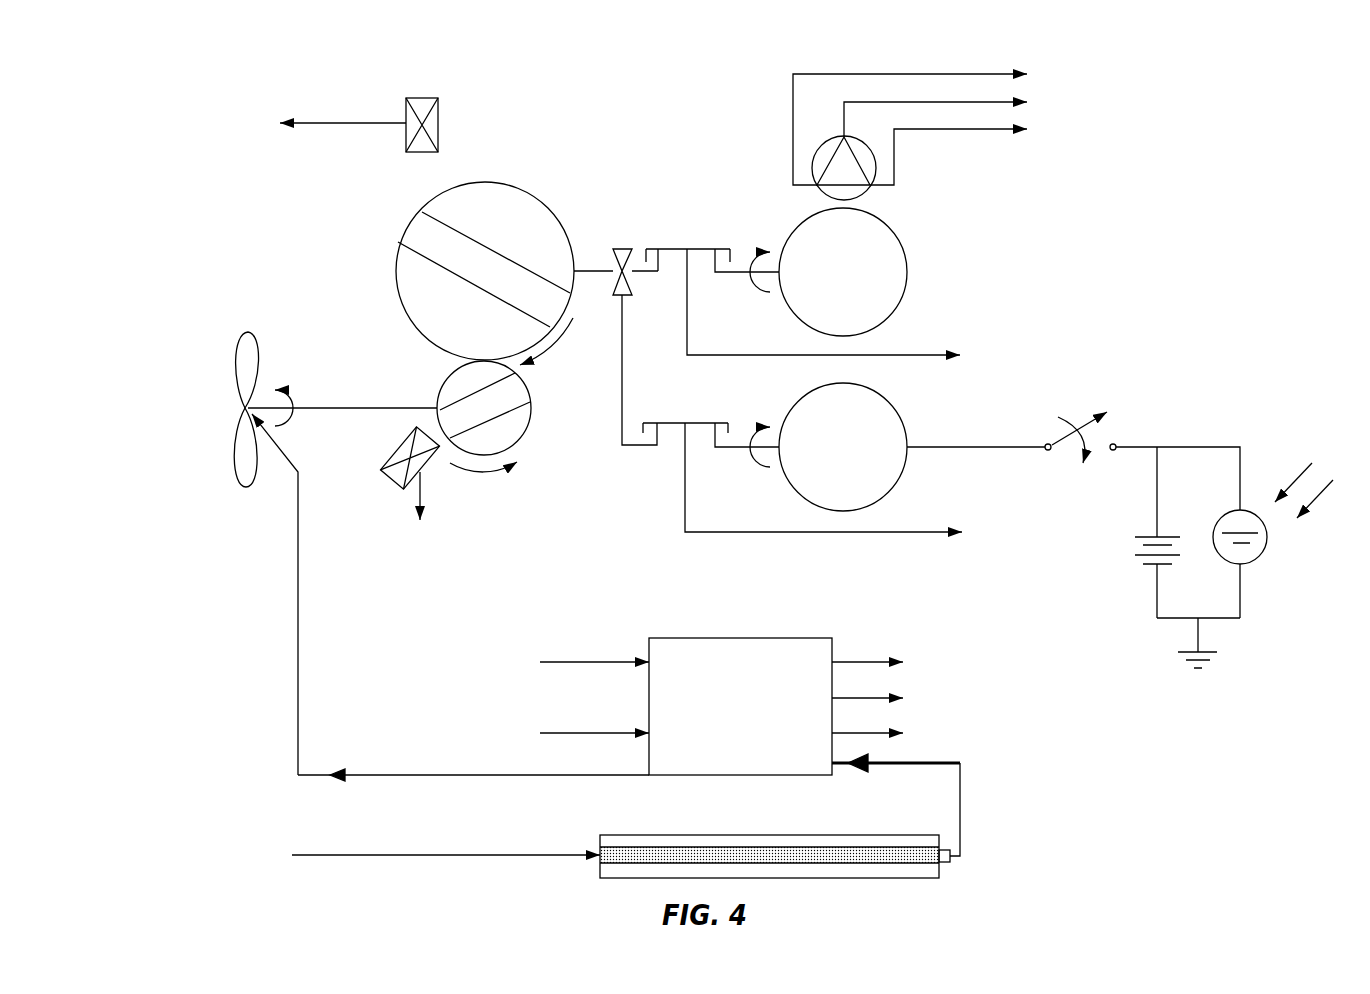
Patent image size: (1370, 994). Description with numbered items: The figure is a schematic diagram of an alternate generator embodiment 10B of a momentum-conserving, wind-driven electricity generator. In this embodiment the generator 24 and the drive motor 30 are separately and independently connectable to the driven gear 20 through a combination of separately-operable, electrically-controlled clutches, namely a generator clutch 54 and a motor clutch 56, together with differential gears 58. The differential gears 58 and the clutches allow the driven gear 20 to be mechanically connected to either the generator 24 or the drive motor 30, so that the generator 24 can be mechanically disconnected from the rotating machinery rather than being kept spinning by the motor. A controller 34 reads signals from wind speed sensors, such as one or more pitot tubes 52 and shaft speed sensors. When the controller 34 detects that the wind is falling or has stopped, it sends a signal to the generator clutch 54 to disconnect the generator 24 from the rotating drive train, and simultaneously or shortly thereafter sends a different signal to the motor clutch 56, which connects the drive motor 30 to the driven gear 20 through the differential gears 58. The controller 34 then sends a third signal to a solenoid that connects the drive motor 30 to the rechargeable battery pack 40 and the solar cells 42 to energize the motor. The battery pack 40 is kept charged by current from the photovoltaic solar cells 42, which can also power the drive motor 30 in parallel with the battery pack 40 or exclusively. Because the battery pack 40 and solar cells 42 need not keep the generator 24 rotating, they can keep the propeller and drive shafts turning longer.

The generator embodiment 10B is at (1172, 62).
The driven gear 20 is at (490, 182).
The generator 24 is at (907, 265).
The drive motor 30 is at (907, 425).
The controller 34 is at (715, 638).
The rechargeable battery pack 40 is at (1157, 565).
The solar cells 42 is at (1267, 545).
The pitot tube 52 is at (692, 835).
The generator clutch 54 is at (667, 249).
The motor clutch 56 is at (670, 423).
The differential gears 58 is at (618, 288).